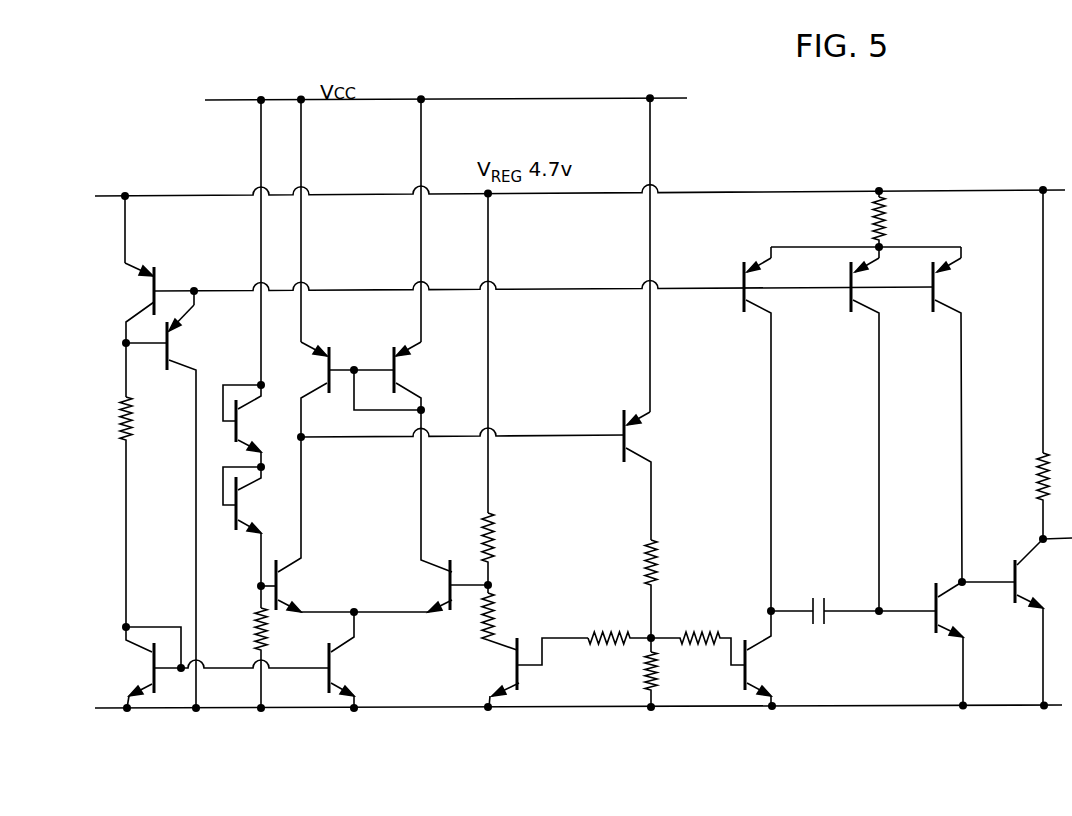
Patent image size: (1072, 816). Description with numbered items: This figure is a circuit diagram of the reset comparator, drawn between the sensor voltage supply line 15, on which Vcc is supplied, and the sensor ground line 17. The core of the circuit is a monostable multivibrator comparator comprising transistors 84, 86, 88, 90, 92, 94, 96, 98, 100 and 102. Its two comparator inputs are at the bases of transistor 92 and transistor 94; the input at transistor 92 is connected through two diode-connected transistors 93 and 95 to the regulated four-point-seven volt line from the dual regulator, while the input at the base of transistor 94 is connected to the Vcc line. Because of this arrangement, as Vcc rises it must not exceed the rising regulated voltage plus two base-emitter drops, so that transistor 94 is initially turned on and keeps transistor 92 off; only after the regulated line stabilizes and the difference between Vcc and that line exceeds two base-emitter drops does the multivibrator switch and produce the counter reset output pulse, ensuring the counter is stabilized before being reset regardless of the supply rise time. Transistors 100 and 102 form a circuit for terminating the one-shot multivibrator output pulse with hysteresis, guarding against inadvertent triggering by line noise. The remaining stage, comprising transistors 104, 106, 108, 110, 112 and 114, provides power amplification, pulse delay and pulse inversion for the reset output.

The sensor voltage supply line 15 is at (531, 99).
The sensor ground line 17 is at (868, 705).
The transistor 84 is at (156, 283).
The transistor 86 is at (169, 352).
The transistor 88 is at (152, 660).
The transistor 90 is at (331, 660).
The transistor 92 is at (278, 582).
The diode-connected transistor 93 is at (238, 510).
The transistor 94 is at (450, 580).
The diode-connected transistor 95 is at (238, 425).
The transistor 96 is at (328, 352).
The transistor 98 is at (394, 354).
The transistor 100 is at (627, 433).
The transistor 102 is at (517, 663).
The transistor 104 is at (747, 658).
The transistor 106 is at (938, 605).
The transistor 108 is at (1017, 566).
The transistor 110 is at (743, 292).
The transistor 112 is at (851, 294).
The transistor 114 is at (933, 294).